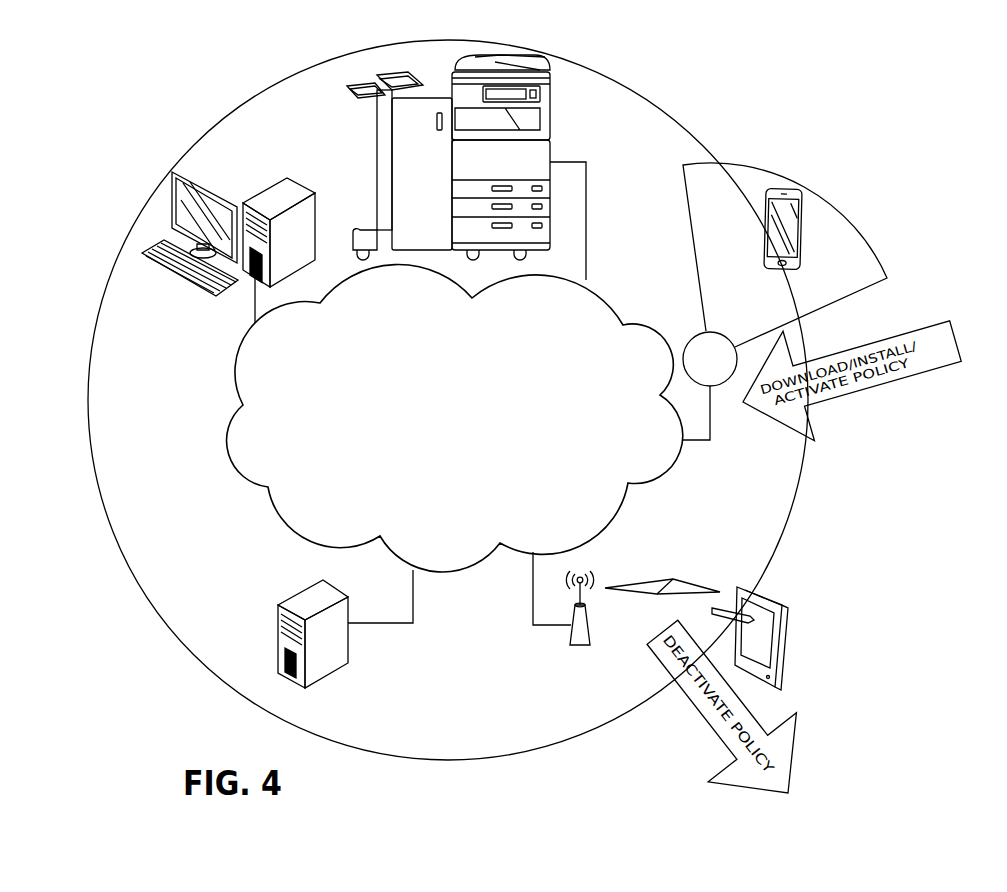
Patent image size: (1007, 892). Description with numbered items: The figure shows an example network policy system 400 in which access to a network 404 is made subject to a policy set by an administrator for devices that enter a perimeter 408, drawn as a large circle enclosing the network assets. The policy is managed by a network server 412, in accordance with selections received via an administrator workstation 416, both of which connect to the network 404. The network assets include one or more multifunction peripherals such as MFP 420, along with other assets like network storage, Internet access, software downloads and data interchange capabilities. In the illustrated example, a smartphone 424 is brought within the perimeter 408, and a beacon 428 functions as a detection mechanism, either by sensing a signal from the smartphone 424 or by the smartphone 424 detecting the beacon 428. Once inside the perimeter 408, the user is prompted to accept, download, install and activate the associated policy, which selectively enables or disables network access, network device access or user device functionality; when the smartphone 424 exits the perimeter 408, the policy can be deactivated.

The network policy system 400 is at (775, 105).
The network 404 is at (636, 490).
The perimeter 408 is at (654, 101).
The network server 412 is at (332, 673).
The administrator workstation 416 is at (274, 184).
The MFP 420 is at (551, 131).
The smartphone 424 is at (803, 219).
The beacon 428 is at (696, 334).